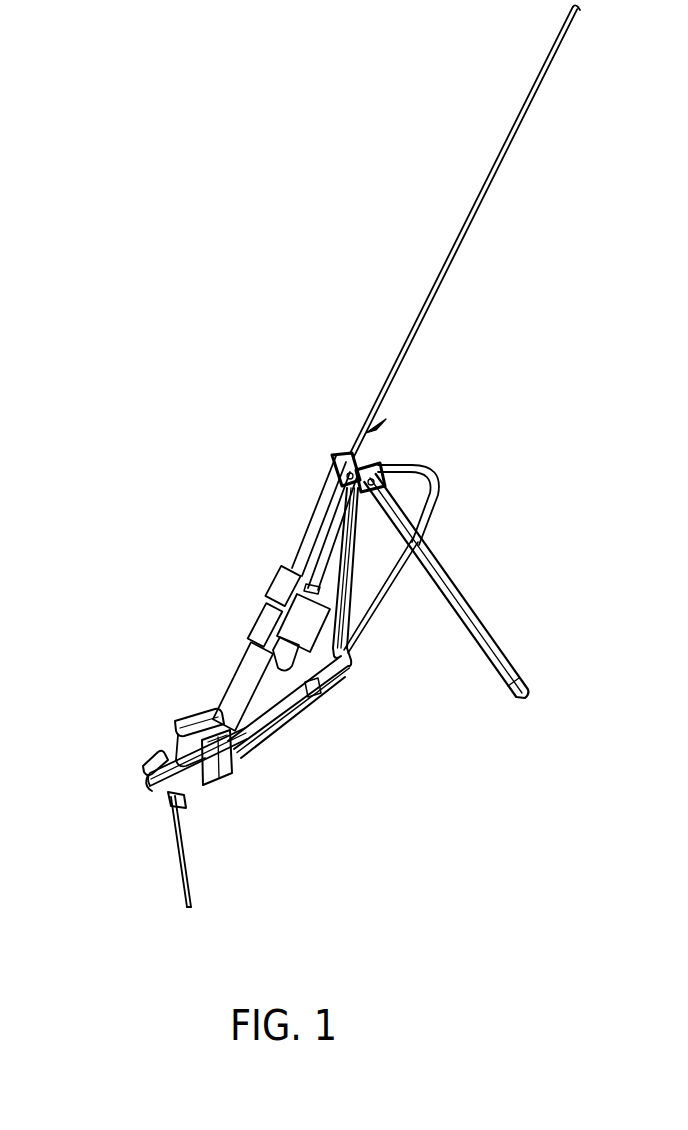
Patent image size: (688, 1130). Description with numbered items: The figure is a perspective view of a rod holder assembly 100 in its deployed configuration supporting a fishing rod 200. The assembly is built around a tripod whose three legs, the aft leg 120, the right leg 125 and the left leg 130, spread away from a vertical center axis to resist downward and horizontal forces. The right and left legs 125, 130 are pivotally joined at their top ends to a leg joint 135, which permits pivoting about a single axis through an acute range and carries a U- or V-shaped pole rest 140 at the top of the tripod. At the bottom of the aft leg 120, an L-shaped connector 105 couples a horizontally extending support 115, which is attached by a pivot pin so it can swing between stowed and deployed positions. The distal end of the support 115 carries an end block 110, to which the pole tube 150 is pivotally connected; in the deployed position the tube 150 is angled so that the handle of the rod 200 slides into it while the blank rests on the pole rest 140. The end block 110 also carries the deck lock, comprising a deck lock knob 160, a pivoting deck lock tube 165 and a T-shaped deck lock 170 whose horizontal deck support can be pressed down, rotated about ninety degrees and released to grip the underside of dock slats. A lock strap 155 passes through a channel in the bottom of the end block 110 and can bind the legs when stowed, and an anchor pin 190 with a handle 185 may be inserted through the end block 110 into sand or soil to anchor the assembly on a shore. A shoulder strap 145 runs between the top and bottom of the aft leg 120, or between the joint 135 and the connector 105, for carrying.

The rod holder assembly 100 is at (326, 728).
The L-shaped connector 105 is at (341, 677).
The end block 110 is at (208, 765).
The support 115 is at (272, 722).
The aft leg 120 is at (353, 590).
The right leg 125 is at (477, 617).
The left leg 130 is at (313, 553).
The leg joint 135 is at (380, 468).
The pole rest 140 is at (333, 450).
The shoulder strap 145 is at (433, 493).
The pole tube 150 is at (223, 683).
The lock strap 155 is at (192, 710).
The deck lock knob 160 is at (173, 750).
The deck lock tube 165 is at (178, 752).
The T-shaped deck lock 170 is at (196, 812).
The handle 185 is at (148, 760).
The anchor pin 190 is at (190, 877).
The rod 200 is at (440, 283).